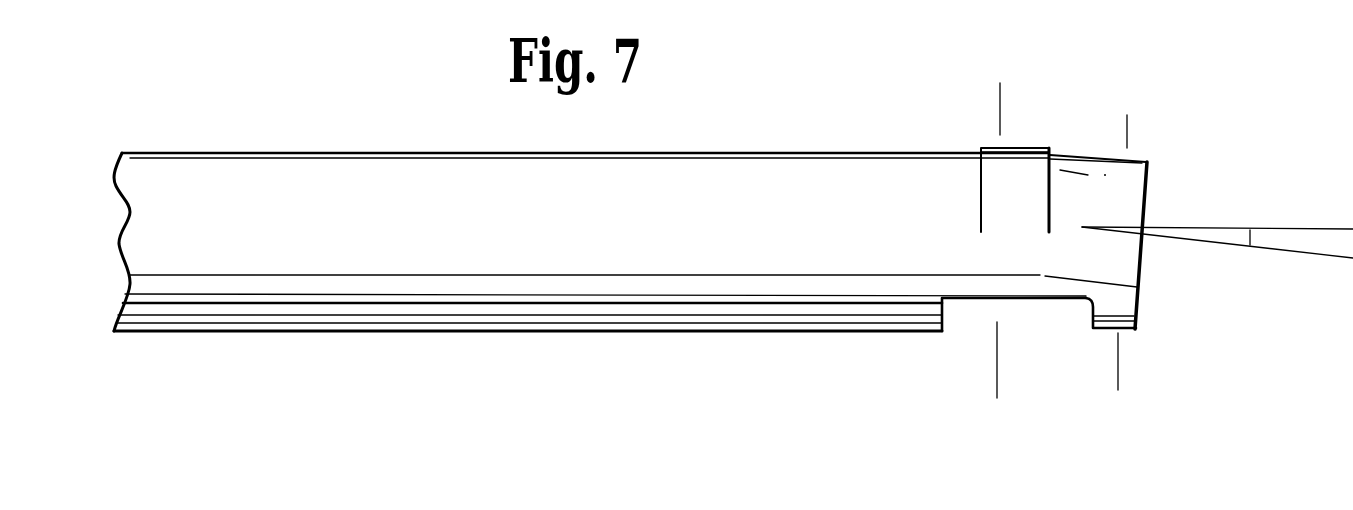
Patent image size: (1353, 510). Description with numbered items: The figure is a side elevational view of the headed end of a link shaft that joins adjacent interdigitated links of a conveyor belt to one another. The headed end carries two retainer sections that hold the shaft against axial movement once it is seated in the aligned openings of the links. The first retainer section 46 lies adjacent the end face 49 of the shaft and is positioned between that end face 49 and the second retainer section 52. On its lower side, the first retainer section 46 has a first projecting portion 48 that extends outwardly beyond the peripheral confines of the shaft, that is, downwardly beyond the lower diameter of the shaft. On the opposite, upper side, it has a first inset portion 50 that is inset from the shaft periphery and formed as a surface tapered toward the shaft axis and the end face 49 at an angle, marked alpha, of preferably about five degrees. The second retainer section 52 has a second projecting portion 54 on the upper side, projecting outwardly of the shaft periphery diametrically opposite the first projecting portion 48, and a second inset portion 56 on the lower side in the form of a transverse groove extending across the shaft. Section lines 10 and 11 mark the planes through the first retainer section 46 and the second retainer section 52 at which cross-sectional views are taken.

The section line 10- 10 is at (1138, 123).
The section line 11- 11 is at (1010, 95).
The first retainer section 46 is at (1125, 259).
The first projecting portion 48 is at (1135, 330).
The end face 49 is at (1147, 208).
The first inset portion 50 is at (1127, 158).
The second retainer section 52 is at (1005, 183).
The second projecting portion 54 is at (1028, 150).
The second inset portion 56 is at (963, 299).